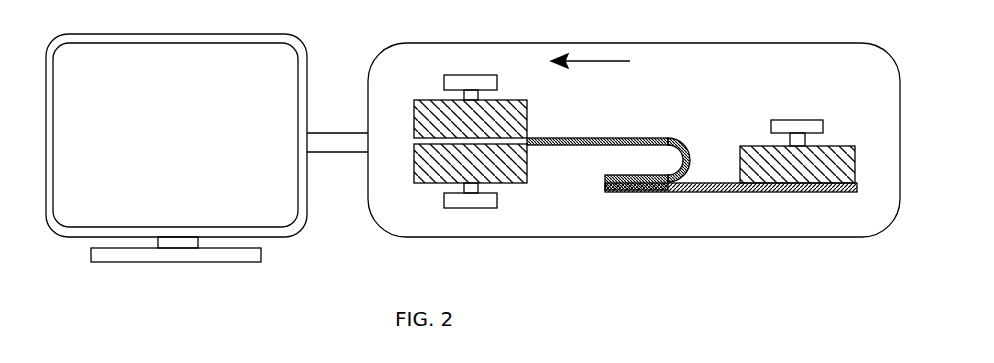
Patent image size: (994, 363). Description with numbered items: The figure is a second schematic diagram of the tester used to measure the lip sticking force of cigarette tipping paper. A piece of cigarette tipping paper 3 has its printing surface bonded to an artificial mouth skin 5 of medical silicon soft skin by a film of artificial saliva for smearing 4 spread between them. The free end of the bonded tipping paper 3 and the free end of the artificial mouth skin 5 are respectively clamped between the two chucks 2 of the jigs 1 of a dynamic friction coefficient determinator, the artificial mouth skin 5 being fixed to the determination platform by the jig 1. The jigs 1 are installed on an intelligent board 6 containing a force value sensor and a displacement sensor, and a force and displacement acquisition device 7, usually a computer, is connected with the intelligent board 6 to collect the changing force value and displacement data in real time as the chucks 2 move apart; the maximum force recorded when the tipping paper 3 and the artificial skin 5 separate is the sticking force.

The jigs 1 is at (527, 165).
The chucks 2 is at (760, 146).
The cigarette tipping paper 3 is at (671, 138).
The artificial saliva for smearing 4 is at (620, 192).
The artificial mouth skin 5 is at (688, 193).
The intelligent board containing force sensors and displacement sensors 6 is at (713, 58).
The force and displacement acquisition device 7 is at (275, 182).